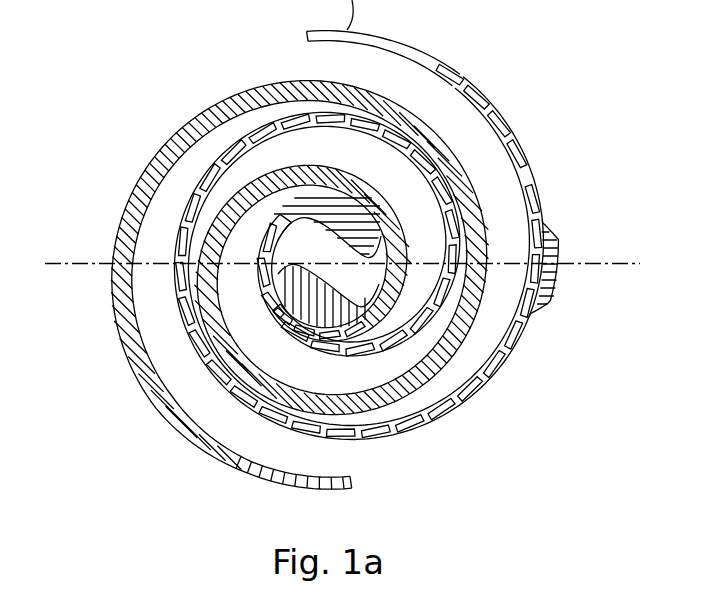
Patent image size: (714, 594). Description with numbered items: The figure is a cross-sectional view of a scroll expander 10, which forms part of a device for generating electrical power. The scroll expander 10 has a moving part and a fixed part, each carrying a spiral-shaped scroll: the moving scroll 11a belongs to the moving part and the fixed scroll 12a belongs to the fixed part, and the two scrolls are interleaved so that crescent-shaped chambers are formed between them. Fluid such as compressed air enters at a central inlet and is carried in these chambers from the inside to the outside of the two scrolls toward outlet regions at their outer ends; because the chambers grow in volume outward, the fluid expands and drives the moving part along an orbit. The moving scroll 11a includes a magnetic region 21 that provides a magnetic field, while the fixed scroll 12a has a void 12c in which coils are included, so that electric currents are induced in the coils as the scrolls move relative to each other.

The scroll expander 10 is at (104, 40).
The moving scroll 11a is at (132, 380).
The magnetic region 21 is at (124, 206).
The void 12c is at (432, 58).
The fixed scroll 12a is at (548, 306).